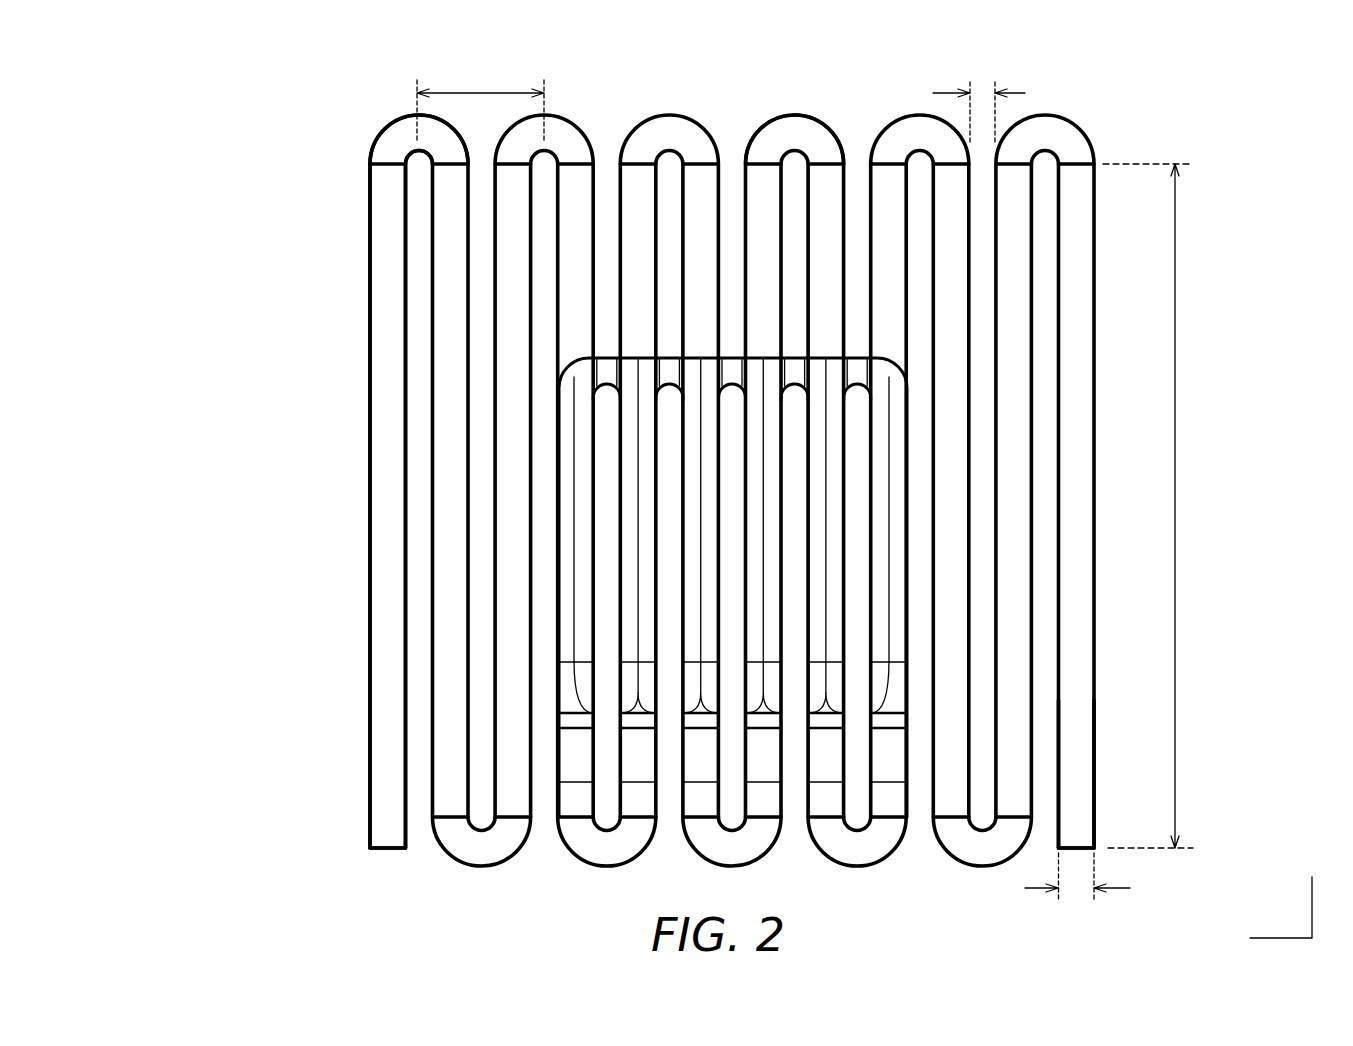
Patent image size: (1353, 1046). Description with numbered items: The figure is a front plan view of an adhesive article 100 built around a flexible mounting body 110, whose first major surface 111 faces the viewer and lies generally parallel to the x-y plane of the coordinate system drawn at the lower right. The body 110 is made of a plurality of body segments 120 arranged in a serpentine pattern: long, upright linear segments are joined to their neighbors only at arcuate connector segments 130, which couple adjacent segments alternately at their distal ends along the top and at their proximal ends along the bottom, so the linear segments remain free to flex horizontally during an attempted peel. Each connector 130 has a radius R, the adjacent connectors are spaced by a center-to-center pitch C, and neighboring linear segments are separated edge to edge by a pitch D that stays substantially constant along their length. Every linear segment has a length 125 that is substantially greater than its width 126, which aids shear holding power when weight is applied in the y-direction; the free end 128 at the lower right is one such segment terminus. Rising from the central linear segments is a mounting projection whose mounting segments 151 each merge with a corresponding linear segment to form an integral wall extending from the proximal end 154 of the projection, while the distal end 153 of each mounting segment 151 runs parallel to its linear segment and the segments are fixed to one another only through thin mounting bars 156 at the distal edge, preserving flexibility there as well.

The adhesive article 100 is at (122, 108).
The flexible mounting body 110 is at (228, 917).
The body segments 120 is at (372, 897).
The connector segment 130 is at (400, 125).
The first major surface 111 is at (390, 598).
The terminal end of conductor 128 is at (1073, 810).
The length 125 is at (1175, 517).
The width 126 is at (1073, 880).
The mounting segment 151 is at (770, 498).
The distal end of mounting segment 153 is at (820, 370).
The proximal end of projection 154 is at (893, 772).
The mounting bar 156 is at (660, 380).
The pitch between connector segments C is at (463, 93).
The pitch between linear segments D is at (978, 102).
The radius of connector segment R is at (798, 112).